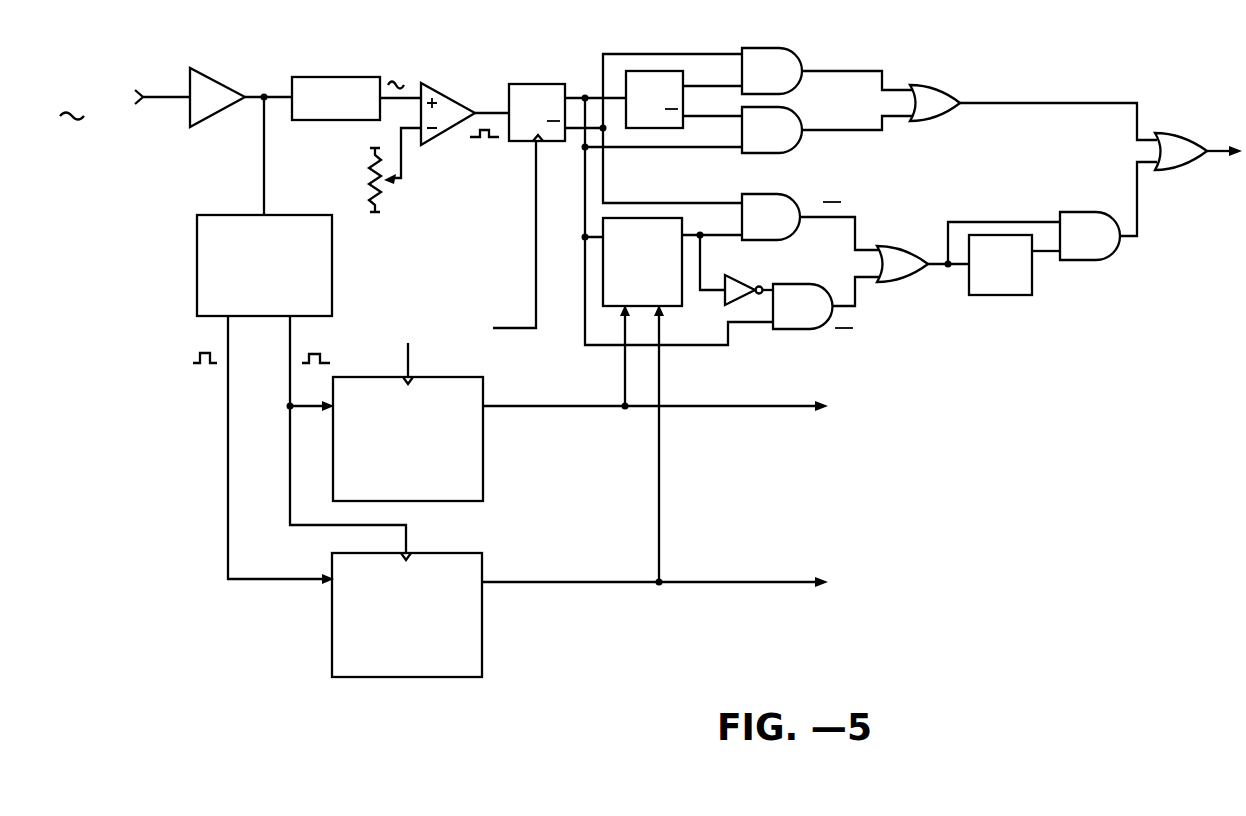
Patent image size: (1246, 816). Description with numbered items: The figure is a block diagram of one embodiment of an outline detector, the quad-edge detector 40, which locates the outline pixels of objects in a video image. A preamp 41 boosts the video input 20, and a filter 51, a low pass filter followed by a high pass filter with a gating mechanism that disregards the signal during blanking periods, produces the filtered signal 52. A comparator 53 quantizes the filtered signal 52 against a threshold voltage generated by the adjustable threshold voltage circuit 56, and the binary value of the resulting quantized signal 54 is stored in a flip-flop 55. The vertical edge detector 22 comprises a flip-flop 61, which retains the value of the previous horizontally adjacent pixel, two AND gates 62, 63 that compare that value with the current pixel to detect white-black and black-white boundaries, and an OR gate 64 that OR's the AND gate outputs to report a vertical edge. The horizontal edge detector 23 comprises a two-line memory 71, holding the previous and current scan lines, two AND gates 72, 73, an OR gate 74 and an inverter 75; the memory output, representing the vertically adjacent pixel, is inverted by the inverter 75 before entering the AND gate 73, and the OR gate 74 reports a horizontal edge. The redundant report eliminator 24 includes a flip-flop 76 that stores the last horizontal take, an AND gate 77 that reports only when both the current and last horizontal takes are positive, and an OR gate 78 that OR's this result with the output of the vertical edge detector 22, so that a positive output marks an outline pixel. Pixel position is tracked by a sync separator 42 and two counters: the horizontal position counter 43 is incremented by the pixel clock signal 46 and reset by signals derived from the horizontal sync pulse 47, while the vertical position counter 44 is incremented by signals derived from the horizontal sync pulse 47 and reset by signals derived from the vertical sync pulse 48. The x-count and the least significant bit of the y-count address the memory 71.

The video input 20 is at (75, 62).
The preamp 41 is at (215, 118).
The filter 51 is at (342, 77).
The filtered signal 52 is at (398, 72).
The comparator 53 is at (455, 92).
The quantized signal 54 is at (475, 141).
The flip-flop 55 is at (539, 84).
The adjustable threshold voltage circuit 56 is at (400, 198).
The vertical edge detector 22 is at (646, 34).
The flip-flop 61 is at (683, 73).
The AND gate 62 is at (783, 48).
The AND gate 63 is at (785, 107).
The OR gate 64 is at (923, 93).
The two-line memory 71 is at (612, 306).
The AND gate 72 is at (780, 194).
The AND gate 73 is at (795, 284).
The OR gate 74 is at (893, 246).
The inverter 75 is at (735, 275).
The flip-flop 76 is at (990, 293).
The AND gate 77 is at (1110, 243).
The OR gate 78 is at (1189, 160).
The horizontal edge detector 23 is at (889, 337).
The redundant report eliminator 24 is at (1064, 314).
The quad-edge detector 40 is at (1030, 543).
The sync separator 42 is at (197, 262).
The horizontal position counter 43 is at (483, 451).
The vertical position counter 44 is at (482, 631).
The pixel clock signal 46 is at (416, 316).
The horizontal sync pulse 47 is at (333, 359).
The vertical sync pulse 48 is at (206, 368).